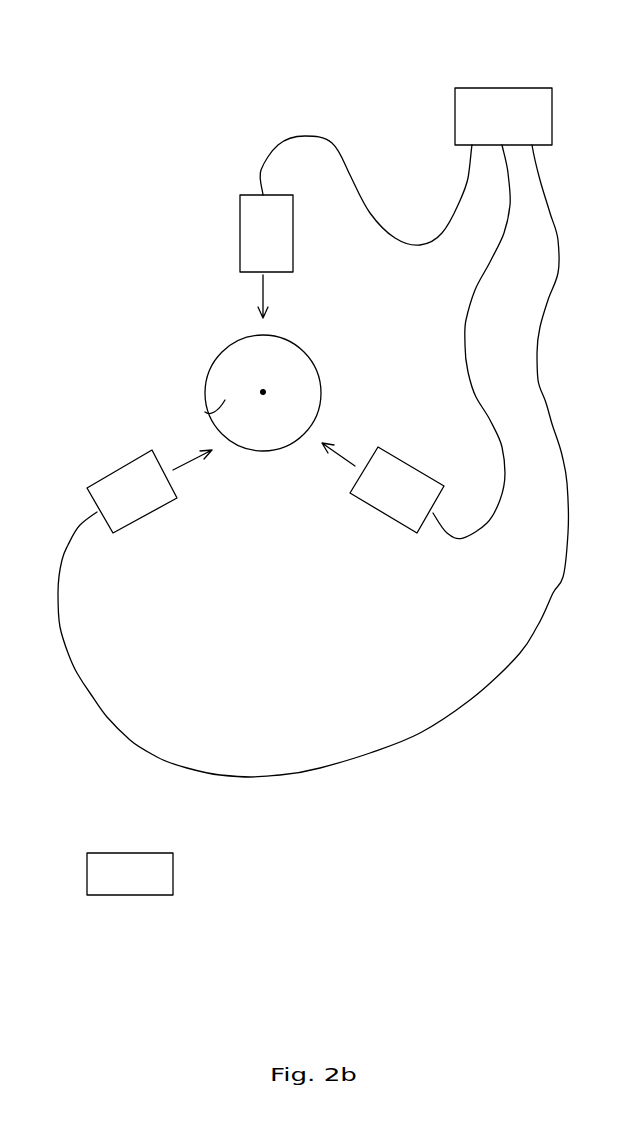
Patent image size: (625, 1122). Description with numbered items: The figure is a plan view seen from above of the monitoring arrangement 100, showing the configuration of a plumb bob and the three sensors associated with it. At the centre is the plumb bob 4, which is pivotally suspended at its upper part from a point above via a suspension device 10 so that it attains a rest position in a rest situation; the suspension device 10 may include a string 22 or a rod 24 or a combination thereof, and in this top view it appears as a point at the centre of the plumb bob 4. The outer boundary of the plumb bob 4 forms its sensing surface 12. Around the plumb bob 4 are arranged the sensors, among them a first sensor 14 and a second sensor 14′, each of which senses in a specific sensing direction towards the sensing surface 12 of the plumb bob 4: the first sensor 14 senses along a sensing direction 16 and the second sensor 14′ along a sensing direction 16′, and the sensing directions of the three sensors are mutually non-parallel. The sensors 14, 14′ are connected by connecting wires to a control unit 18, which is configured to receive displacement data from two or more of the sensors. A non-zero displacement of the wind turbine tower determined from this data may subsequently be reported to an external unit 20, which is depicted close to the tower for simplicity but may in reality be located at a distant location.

The system 100 is at (146, 107).
The control unit 18 is at (500, 108).
The sensor 14 is at (254, 232).
The sensing direction 16 is at (268, 290).
The sensing surface 12 is at (212, 362).
The plumb bob 4 is at (208, 414).
The suspension device 10 is at (268, 390).
The string 22 is at (339, 366).
The rod 24 is at (350, 366).
The sensor 14′ is at (136, 482).
The sensing direction 16′ is at (203, 465).
The external unit 20 is at (100, 880).